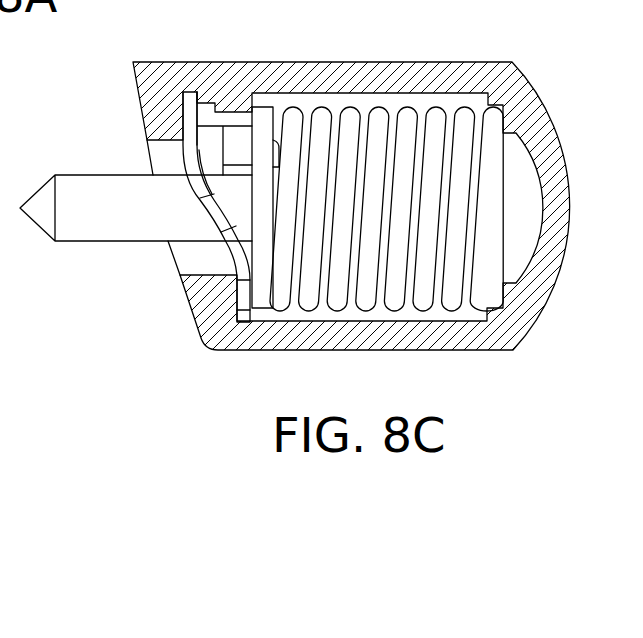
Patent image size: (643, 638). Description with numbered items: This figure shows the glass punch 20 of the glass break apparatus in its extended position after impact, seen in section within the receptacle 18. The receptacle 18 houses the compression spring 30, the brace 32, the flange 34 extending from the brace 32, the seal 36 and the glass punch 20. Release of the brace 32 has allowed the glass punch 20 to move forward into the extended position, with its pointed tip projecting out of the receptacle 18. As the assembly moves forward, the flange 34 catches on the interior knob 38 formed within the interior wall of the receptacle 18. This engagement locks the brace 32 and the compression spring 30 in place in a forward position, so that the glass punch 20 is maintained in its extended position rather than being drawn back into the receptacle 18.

The receptacle 18 is at (530, 313).
The glass punch 20 is at (113, 205).
The compression spring 30 is at (483, 213).
The brace 32 is at (268, 127).
The flange 34 is at (221, 114).
The seal 36 is at (242, 312).
The interior knob 38 is at (202, 97).